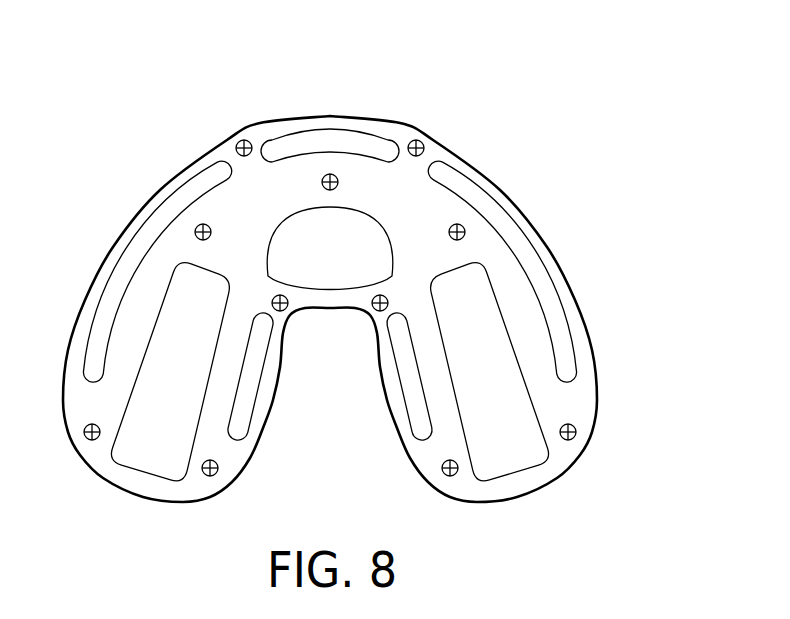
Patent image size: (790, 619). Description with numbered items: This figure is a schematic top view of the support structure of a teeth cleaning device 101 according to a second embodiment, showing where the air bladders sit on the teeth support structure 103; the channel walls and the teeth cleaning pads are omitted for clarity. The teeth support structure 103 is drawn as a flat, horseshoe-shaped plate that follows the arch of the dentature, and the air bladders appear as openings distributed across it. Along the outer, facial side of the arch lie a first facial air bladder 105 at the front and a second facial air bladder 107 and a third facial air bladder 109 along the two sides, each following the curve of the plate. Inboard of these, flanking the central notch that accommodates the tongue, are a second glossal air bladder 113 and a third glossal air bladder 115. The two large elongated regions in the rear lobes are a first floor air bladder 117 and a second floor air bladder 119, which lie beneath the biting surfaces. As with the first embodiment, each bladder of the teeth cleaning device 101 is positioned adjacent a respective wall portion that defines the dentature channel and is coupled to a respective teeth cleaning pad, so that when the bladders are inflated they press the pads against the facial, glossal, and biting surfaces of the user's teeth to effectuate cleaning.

The teeth cleaning device 101 is at (483, 100).
The teeth support structure 103 is at (273, 123).
The first facial air bladder 105 is at (373, 147).
The second facial air bladder 107 is at (172, 207).
The third facial air bladder 109 is at (510, 233).
The second glossal air bladder 113 is at (250, 385).
The third glossal air bladder 115 is at (412, 385).
The first floor air bladder 117 is at (162, 452).
The second floor air bladder 119 is at (512, 452).